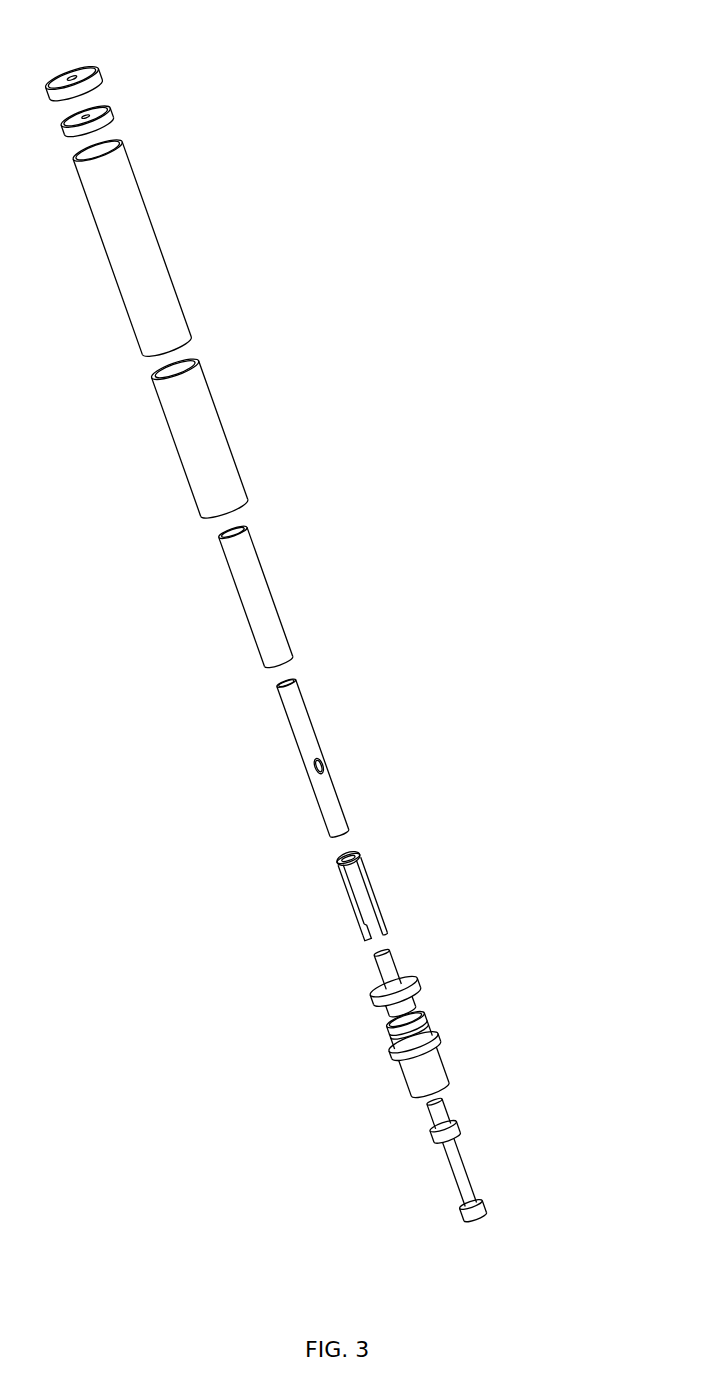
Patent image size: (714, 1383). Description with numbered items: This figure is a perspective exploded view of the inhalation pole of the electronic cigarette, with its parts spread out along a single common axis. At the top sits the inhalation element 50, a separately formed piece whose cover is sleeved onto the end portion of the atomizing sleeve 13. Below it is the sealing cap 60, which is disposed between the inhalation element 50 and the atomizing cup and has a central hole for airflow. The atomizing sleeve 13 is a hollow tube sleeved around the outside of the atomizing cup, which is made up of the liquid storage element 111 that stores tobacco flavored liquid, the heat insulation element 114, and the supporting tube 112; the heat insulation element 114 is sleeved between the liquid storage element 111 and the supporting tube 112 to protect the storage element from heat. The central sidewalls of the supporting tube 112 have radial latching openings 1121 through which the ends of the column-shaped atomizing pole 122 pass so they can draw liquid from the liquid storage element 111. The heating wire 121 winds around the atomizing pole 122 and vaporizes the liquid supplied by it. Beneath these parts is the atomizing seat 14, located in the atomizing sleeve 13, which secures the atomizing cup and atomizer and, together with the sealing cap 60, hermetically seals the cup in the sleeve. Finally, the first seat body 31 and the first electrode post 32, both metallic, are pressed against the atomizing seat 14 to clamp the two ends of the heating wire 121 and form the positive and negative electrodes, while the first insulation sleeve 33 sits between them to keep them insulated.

The inhalation element 50 is at (88, 82).
The sealing cap 60 is at (105, 115).
The atomizing sleeve 13 is at (150, 285).
The liquid storage element 111 is at (193, 428).
The heat insulation element 114 is at (258, 605).
The supporting tube 112 is at (307, 725).
The latching openings 1121 is at (327, 767).
The atomizing pole 122 is at (360, 857).
The heating wire 121 is at (380, 912).
The atomizing seat 14 is at (413, 990).
The first seat body 31 is at (428, 1062).
The first insulation sleeve 33 is at (450, 1130).
The first electrode post 32 is at (467, 1190).